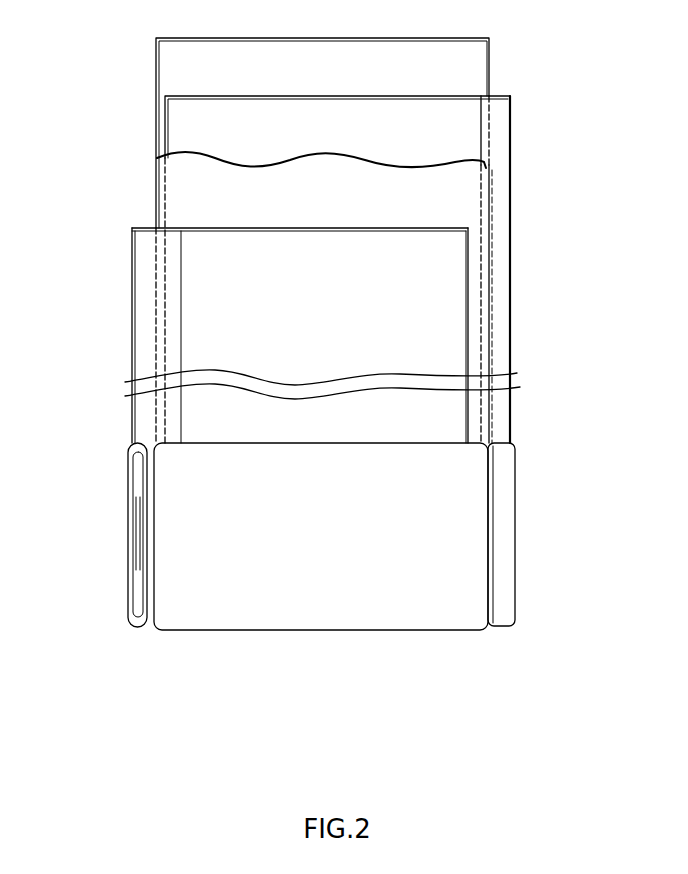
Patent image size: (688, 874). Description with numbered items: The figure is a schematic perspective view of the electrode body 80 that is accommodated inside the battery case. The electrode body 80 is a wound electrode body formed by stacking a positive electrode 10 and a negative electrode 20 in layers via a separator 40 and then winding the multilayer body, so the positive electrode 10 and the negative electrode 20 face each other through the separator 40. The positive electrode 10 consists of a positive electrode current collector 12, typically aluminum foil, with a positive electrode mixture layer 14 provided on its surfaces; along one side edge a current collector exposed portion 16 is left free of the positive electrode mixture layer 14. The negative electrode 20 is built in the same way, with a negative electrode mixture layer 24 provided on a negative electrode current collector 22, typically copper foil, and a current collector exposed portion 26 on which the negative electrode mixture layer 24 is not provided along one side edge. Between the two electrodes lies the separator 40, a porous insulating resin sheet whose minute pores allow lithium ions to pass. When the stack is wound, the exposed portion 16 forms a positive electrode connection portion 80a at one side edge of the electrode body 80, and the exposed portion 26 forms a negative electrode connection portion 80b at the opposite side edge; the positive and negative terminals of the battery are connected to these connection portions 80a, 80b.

The positive electrode 10 is at (271, 335).
The positive electrode current collector 12 is at (131, 368).
The positive electrode mixture layer 14 is at (195, 250).
The current collector exposed portion 16 is at (148, 335).
The negative electrode 20 is at (392, 267).
The negative electrode current collector 22 is at (510, 278).
The negative electrode mixture layer 24 is at (475, 122).
The current collector exposed portion 26 is at (498, 246).
The separator 40 is at (176, 60).
The electrode body 80 is at (323, 574).
The positive electrode connection portion 80a is at (146, 632).
The negative electrode connection portion 80b is at (504, 615).